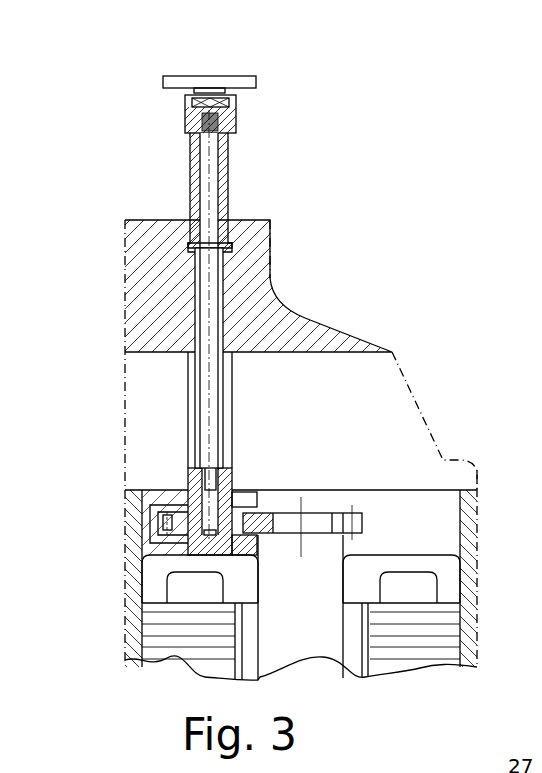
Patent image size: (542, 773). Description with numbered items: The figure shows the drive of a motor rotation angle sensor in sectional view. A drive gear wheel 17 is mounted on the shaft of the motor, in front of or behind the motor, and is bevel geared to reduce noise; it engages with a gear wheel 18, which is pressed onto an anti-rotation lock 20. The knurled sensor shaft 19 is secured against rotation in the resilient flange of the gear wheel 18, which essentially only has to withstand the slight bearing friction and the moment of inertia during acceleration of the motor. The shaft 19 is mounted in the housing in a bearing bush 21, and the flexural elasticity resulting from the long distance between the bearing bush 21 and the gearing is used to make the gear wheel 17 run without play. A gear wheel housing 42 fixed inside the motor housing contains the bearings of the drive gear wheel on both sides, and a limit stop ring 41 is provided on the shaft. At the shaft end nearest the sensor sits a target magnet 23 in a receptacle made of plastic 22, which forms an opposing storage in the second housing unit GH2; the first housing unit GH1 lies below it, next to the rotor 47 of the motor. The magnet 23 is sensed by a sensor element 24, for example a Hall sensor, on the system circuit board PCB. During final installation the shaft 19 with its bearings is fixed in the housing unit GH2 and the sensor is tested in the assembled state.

The circuit board PCB is at (245, 82).
The sensor element 24 is at (205, 82).
The target magnet 23 is at (238, 100).
The anti-rotation lock 20 is at (185, 127).
The plastic receptacle 22 is at (212, 200).
The bearing bush 21 is at (188, 230).
The limit stop ring 41 is at (185, 250).
The second housing unit GH2 is at (165, 295).
The first housing unit GH1 is at (138, 393).
The shaft 19 is at (212, 380).
The gear wheel housing 42 is at (140, 505).
The drive gear wheel 17 is at (263, 515).
The drive gear wheel 18 is at (257, 547).
The rotor 47 is at (320, 575).